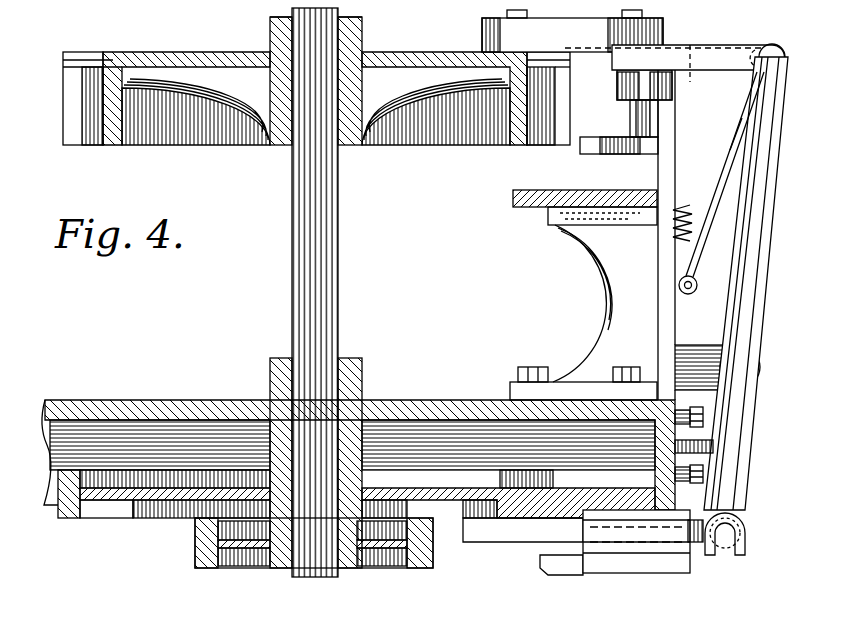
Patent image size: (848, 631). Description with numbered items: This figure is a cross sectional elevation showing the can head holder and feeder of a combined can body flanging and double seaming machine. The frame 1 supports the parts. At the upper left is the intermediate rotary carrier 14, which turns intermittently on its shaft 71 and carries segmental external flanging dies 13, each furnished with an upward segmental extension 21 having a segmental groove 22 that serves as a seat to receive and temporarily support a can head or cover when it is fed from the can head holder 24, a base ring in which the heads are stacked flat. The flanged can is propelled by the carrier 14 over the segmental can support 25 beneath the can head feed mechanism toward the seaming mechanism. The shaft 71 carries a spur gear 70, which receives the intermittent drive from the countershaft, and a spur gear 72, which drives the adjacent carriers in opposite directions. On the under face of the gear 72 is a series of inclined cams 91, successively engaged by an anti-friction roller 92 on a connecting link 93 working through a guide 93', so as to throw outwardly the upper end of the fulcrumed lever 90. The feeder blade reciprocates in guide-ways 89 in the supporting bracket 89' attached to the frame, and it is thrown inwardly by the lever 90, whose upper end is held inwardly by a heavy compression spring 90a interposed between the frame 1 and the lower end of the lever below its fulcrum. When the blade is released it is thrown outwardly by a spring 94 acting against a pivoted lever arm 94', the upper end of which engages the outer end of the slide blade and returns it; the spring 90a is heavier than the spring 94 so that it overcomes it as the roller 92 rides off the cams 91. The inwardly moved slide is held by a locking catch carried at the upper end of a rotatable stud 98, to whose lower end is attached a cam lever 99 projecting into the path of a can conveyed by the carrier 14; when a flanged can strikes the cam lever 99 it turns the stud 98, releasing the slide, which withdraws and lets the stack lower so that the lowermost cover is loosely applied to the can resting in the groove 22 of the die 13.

The frame 1 is at (133, 400).
The segmental external flanging die 13 is at (78, 72).
The intermediate rotary carrier 14 is at (418, 46).
The upward segmental extension 21 is at (122, 56).
The segmental groove 22 is at (108, 62).
The can head holder 24 is at (562, 39).
The segmental can support 25 is at (541, 191).
The spur gear 70 is at (232, 569).
The shaft 71 is at (327, 300).
The spur gear 72 is at (64, 519).
The guide-ways 89 is at (698, 75).
The supporting bracket 89' is at (665, 48).
The fulcrumed lever 90 is at (757, 295).
The compression spring 90a is at (717, 450).
The inclined cams 91 is at (513, 510).
The anti-friction roller 92 is at (478, 520).
The connecting link 93 is at (716, 551).
The guide 93' is at (636, 567).
The spring 94 is at (748, 183).
The pivoted lever arm 94' is at (712, 139).
The rotatable stud 98 is at (632, 117).
The cam lever 99 is at (597, 153).